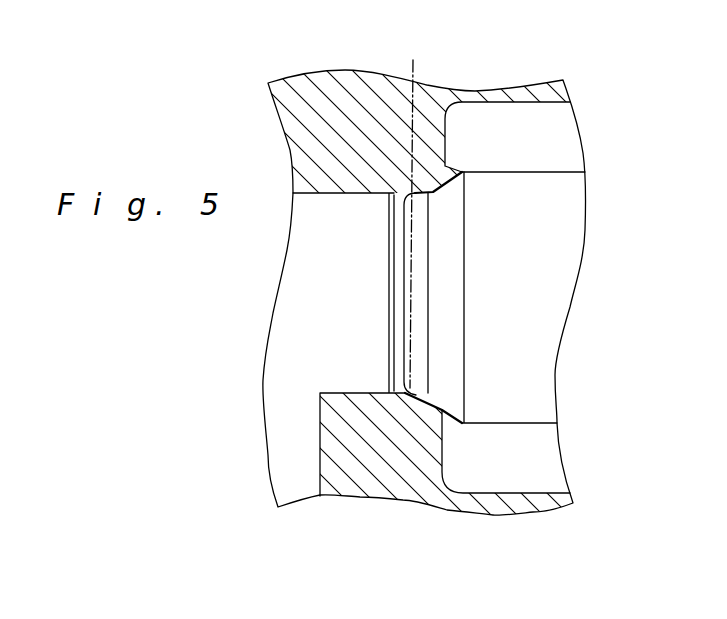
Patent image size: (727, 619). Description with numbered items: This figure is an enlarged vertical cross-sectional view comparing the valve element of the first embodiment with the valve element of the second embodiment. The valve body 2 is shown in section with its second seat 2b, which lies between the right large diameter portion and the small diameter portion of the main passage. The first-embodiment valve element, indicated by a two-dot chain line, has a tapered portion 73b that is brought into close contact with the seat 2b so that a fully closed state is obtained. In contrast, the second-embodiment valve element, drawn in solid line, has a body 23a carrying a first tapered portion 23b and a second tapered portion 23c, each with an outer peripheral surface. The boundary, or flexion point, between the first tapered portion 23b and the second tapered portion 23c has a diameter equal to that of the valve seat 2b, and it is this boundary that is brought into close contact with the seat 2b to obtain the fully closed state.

The valve body 2 is at (497, 112).
The second seat 2b is at (425, 193).
The tapered portion 73b is at (419, 211).
The valve element body 23a is at (500, 400).
The first tapered portion 23b is at (442, 393).
The second tapered portion 23c is at (407, 388).